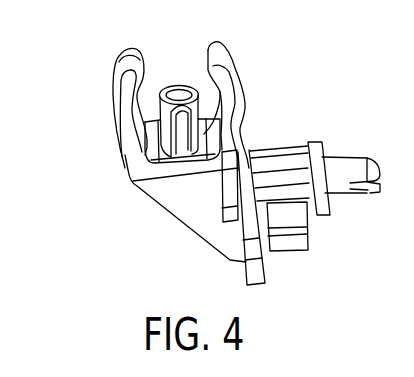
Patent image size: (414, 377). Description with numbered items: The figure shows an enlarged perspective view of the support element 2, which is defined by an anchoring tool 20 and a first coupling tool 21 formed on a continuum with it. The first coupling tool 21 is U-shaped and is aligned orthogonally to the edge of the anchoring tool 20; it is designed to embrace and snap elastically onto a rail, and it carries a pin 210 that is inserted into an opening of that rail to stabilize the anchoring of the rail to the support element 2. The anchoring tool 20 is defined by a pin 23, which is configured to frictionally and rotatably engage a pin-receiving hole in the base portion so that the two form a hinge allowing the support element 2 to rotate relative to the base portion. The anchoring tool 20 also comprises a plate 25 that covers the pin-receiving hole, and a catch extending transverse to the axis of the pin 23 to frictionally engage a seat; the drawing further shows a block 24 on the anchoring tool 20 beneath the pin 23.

The support element 2 is at (172, 233).
The anchoring tool 20 is at (316, 122).
The first coupling tool 21 is at (107, 97).
The pin 210 is at (182, 93).
The pin 23 is at (354, 172).
The block 24 is at (290, 243).
The plate 25 is at (250, 153).